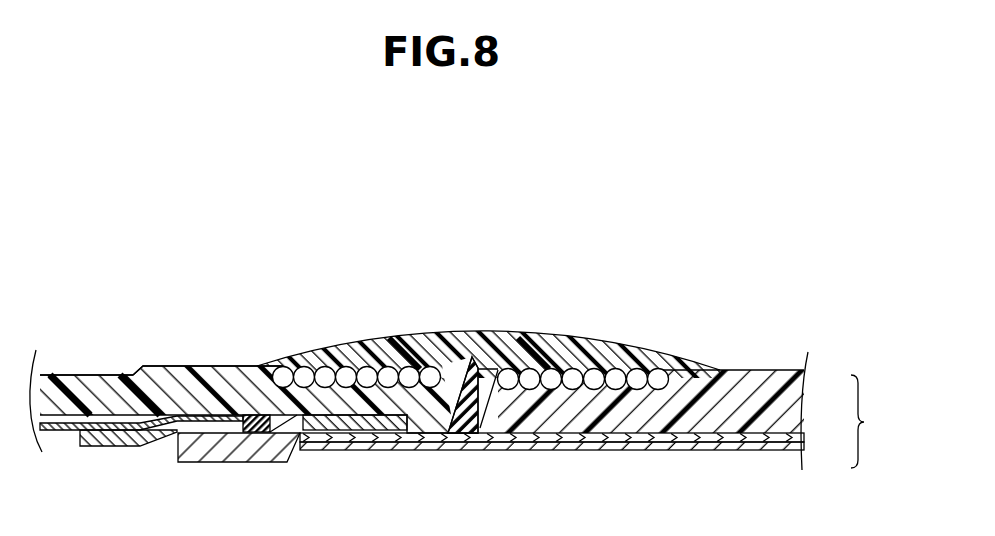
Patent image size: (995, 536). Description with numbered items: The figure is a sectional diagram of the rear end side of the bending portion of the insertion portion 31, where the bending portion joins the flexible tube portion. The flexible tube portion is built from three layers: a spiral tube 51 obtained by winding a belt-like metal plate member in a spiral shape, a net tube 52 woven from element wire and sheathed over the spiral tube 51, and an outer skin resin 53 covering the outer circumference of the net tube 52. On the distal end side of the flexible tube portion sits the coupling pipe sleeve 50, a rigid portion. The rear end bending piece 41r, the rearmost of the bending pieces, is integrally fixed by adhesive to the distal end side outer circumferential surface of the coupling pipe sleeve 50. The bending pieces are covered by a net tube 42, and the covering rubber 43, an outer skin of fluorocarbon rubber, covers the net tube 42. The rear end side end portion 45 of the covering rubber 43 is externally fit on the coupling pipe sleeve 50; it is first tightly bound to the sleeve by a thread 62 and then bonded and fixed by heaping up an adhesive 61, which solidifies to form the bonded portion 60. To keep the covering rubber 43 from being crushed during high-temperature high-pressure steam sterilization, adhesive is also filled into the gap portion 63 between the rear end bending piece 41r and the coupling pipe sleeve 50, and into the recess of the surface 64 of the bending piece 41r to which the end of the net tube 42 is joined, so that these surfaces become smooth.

The insertion portion 31 is at (462, 411).
The spiral tube 51 is at (737, 452).
The net tube 52 is at (775, 437).
The outer skin resin 53 is at (778, 392).
The net tube 42 is at (73, 375).
The covering rubber 43 is at (92, 375).
The rear end bending piece 41r is at (125, 375).
The surface of the bending piece 64 is at (203, 400).
The gap portion 63 is at (246, 403).
The coupling pipe sleeve 50 is at (474, 301).
The bonded portion 60 is at (488, 276).
The adhesive 61 is at (387, 383).
The thread 62 is at (403, 366).
The rear end side end portion 45 is at (303, 368).